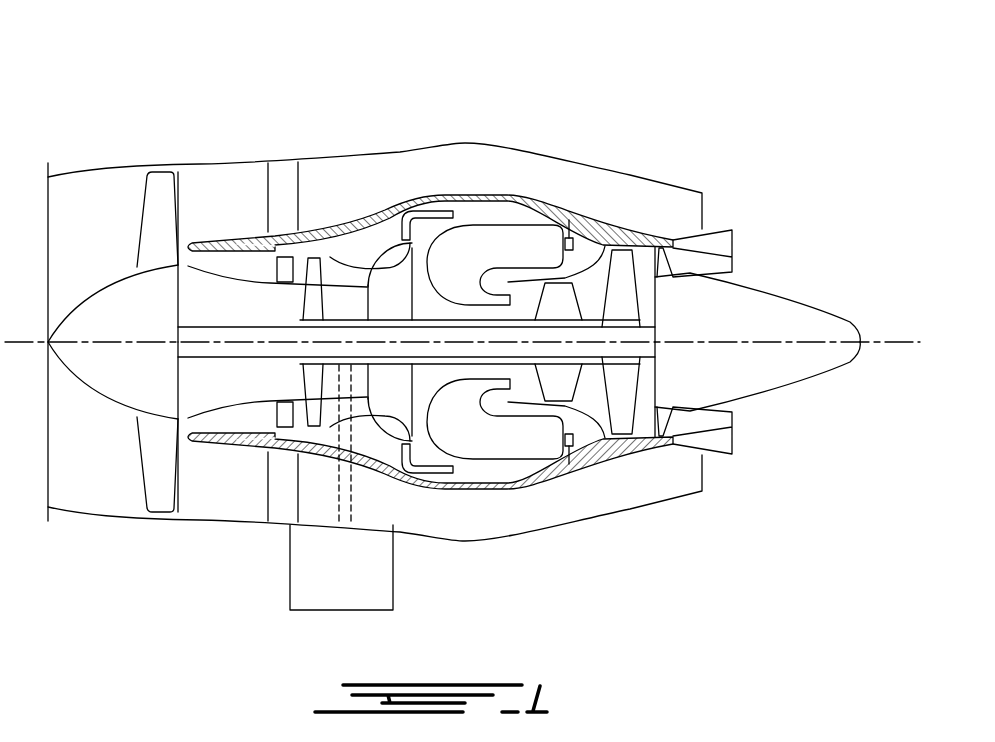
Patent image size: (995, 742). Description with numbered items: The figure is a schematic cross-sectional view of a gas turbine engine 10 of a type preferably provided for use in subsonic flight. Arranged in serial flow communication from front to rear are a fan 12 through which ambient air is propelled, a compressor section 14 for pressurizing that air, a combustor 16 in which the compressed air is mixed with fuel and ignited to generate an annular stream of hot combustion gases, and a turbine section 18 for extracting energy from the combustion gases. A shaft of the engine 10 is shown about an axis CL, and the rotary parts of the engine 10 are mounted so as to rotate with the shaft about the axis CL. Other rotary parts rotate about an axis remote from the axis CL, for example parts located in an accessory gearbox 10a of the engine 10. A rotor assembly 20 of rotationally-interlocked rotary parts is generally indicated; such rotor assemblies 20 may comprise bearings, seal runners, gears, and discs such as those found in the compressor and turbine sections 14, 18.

The gas turbine engine 10 is at (614, 122).
The accessory gearbox 10a is at (312, 578).
The fan 12 is at (156, 452).
The compressor section 14 is at (355, 278).
The combustor 16 is at (495, 240).
The turbine section 18 is at (590, 392).
The rotor assembly 20 is at (311, 262).
The axis CL is at (887, 342).